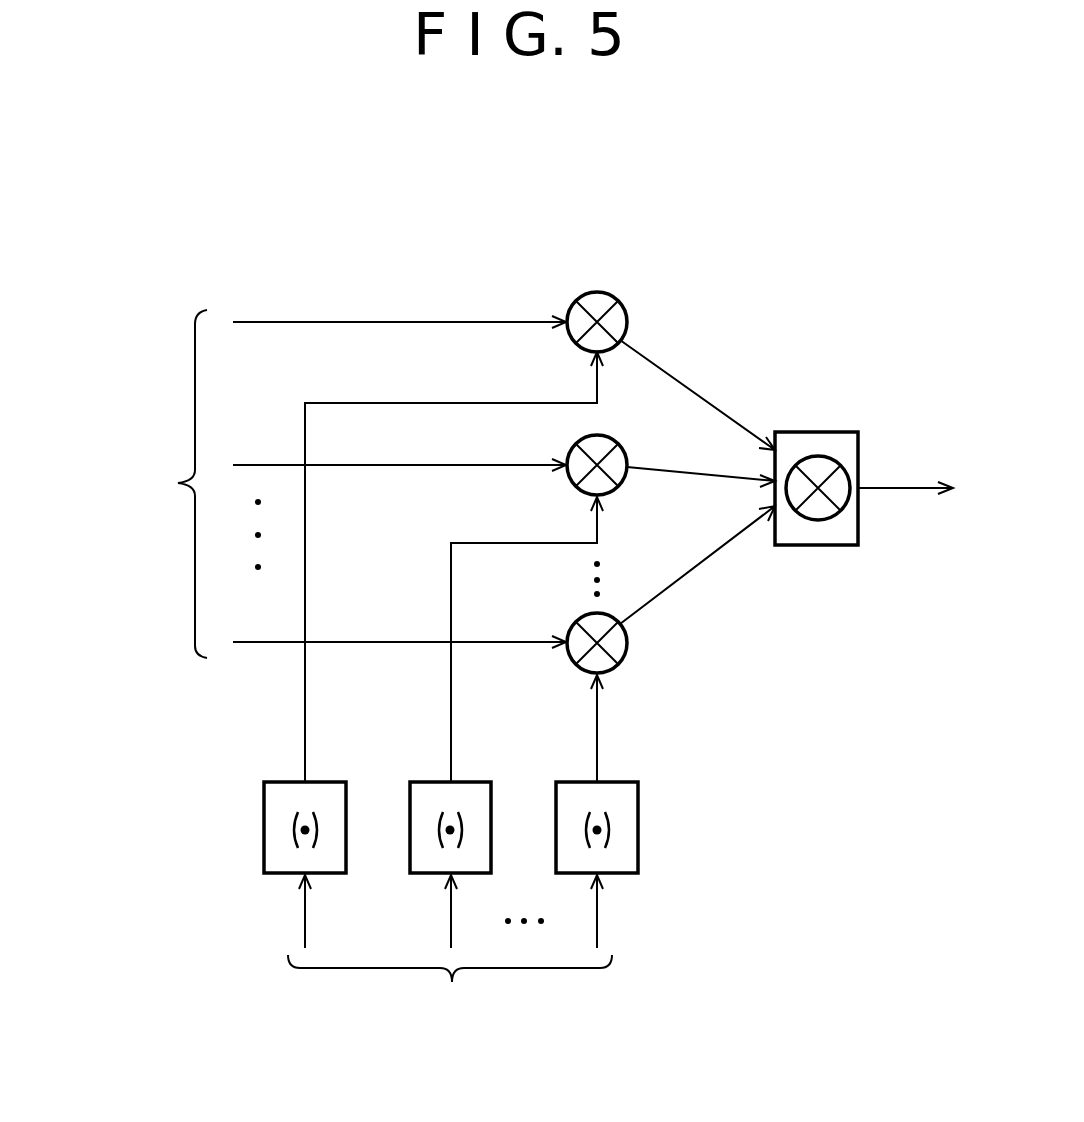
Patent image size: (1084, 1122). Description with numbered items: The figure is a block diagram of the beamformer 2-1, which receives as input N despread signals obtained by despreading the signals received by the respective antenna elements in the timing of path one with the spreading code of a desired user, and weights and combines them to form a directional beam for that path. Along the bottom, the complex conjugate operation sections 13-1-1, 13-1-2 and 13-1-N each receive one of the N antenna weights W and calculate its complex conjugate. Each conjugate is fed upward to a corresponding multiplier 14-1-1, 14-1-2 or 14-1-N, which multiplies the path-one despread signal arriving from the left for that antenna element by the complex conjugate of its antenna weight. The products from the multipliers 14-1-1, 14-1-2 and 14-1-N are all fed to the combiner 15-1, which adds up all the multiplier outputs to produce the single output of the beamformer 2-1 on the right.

The beamformer 2-1 is at (418, 247).
The multiplier 14-1-1 is at (608, 295).
The multiplier 14-1-2 is at (597, 465).
The multiplier 14-1-N is at (627, 640).
The combiner 15-1 is at (822, 432).
The complex conjugate operation section 13-1-1 is at (262, 834).
The complex conjugate operation section 13-1-2 is at (450, 827).
The complex conjugate operation section 13-1-N is at (638, 822).